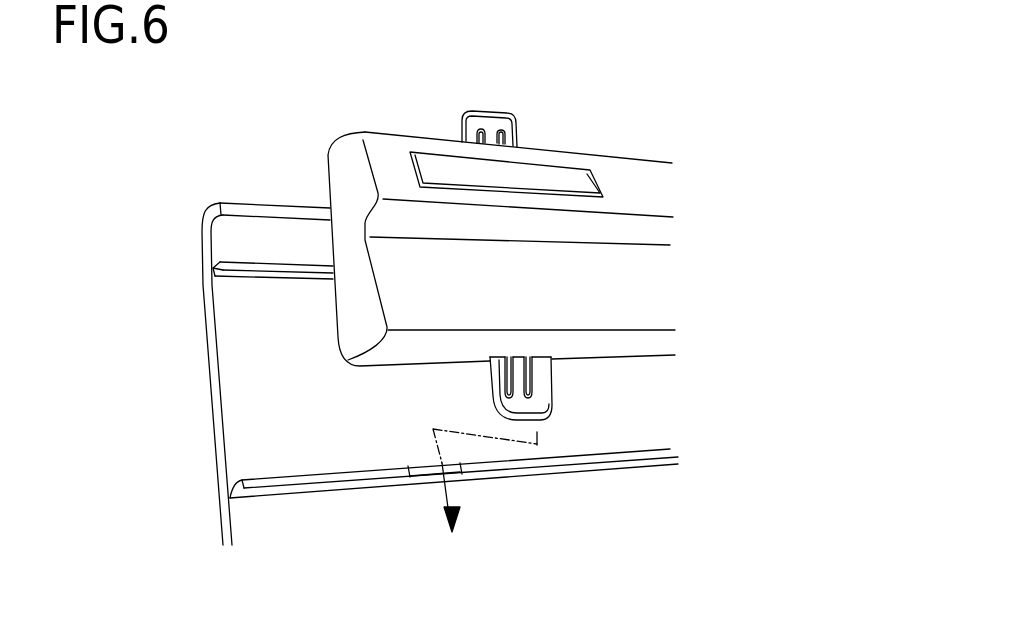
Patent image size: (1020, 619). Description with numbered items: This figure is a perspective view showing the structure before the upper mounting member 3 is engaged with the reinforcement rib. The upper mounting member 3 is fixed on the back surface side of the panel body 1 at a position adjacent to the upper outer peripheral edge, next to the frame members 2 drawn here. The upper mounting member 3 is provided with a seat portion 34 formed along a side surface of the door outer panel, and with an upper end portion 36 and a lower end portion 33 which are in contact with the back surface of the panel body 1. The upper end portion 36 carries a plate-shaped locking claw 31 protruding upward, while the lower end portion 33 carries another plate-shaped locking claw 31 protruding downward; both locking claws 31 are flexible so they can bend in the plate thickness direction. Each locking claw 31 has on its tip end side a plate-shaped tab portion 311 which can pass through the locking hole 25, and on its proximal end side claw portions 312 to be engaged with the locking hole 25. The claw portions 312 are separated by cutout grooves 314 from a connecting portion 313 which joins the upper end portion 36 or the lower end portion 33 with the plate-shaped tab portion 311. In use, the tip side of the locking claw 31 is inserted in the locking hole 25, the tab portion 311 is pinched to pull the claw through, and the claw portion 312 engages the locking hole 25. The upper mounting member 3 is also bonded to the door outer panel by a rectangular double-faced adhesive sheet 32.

The panel body 1 is at (280, 409).
The rail 2 is at (257, 268).
The upper mounting member 3 is at (549, 244).
The locking hole 25 is at (421, 483).
The locking claw 31 is at (523, 298).
The adhesive sheet 32 is at (435, 168).
The lower end portion 33 is at (610, 347).
The seat portion 34 is at (653, 183).
The upper end portion 36 is at (598, 157).
The plate-shaped tab portion 311 is at (535, 408).
The claw portion 312 is at (498, 357).
The connecting portion 313 is at (515, 353).
The cutout groove 314 is at (507, 373).